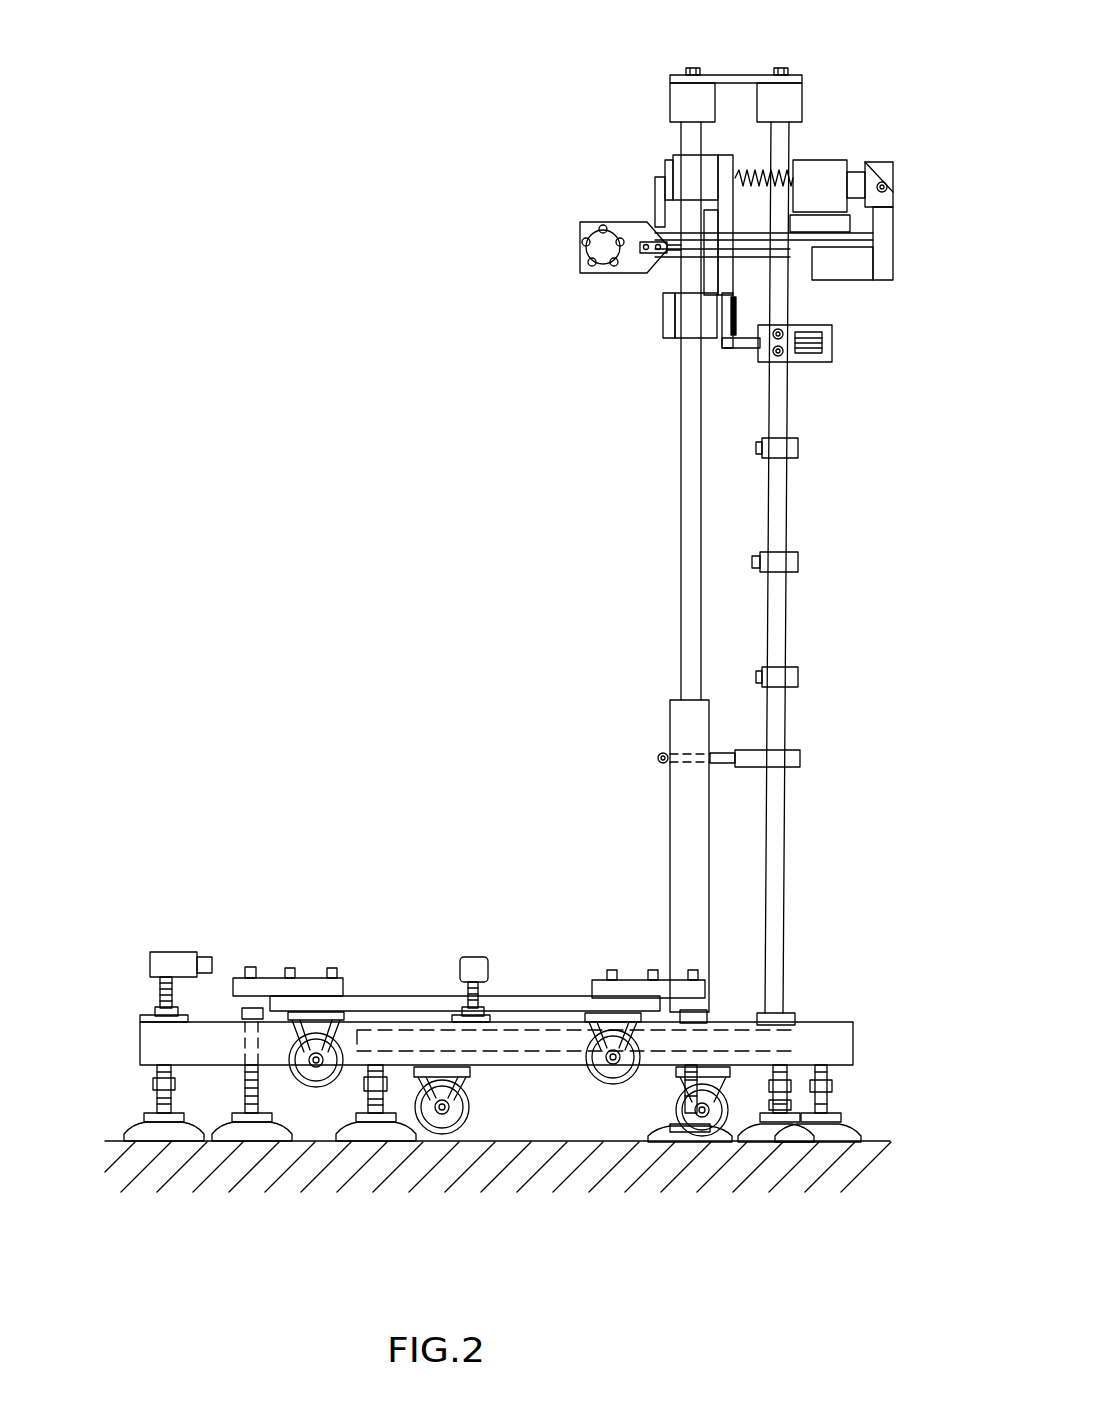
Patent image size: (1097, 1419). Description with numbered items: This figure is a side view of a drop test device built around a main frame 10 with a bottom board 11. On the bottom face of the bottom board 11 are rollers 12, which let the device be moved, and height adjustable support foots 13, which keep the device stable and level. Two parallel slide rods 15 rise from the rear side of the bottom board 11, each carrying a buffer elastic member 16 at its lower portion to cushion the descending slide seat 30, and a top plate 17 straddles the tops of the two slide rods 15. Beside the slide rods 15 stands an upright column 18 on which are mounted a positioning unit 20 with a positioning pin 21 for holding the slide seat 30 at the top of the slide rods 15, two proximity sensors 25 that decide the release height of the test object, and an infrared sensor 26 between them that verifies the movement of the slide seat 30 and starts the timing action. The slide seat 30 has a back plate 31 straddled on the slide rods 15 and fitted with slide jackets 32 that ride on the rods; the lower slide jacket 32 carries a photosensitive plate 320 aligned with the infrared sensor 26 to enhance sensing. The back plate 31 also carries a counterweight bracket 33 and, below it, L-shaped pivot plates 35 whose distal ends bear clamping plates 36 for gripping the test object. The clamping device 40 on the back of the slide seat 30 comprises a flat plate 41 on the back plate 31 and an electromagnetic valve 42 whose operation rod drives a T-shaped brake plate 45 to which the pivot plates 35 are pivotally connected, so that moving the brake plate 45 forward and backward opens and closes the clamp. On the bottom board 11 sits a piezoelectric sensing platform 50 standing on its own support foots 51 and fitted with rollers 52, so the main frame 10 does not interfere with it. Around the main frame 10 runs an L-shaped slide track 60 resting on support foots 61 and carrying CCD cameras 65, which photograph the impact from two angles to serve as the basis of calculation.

The main frame 10 is at (798, 1004).
The bottom board 11 is at (568, 1057).
The rollers 12 is at (462, 1128).
The height adjustable support foots 13 is at (397, 1130).
The slide rods 15 is at (687, 543).
The buffer elastic members 16 is at (685, 890).
The top plate 17 is at (683, 100).
The upright column 18 is at (773, 892).
The positioning unit 20 is at (830, 363).
The positioning pin 21 is at (740, 350).
The proximity sensors 25 is at (797, 450).
The infrared sensor 26 is at (788, 562).
The slide seat 30 is at (648, 295).
The back plate 31 is at (727, 162).
The slide jackets 32 is at (660, 167).
The counterweight bracket 33 is at (647, 205).
The L-shaped pivot plates 35 is at (653, 260).
The clamping plate 36 is at (602, 247).
The clamping device 40 is at (805, 150).
The flat plate 41 is at (837, 227).
The electromagnetic valve 42 is at (820, 180).
The T-shaped brake plate 45 is at (857, 255).
The piezoelectric sensing platform 50 is at (405, 1003).
The support foots 51 is at (262, 1098).
The rollers 52 is at (323, 1080).
The L-shaped slide track 60 is at (150, 1040).
The support foots 61 is at (133, 1135).
The CCD cameras 65 is at (175, 960).
The photosensitive plate 320 is at (740, 313).